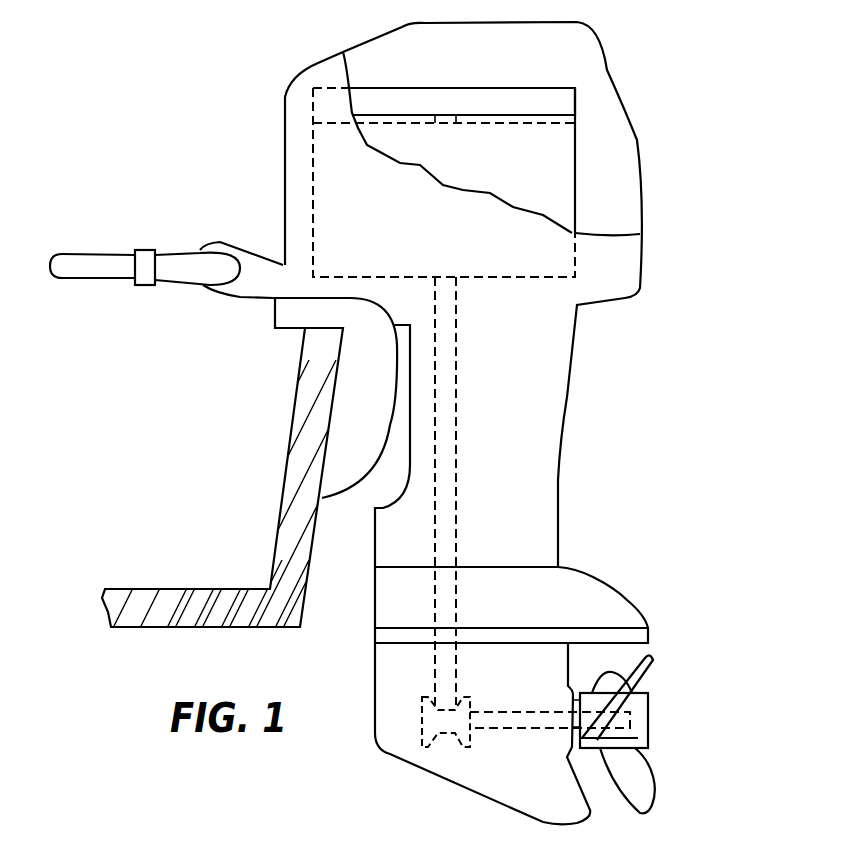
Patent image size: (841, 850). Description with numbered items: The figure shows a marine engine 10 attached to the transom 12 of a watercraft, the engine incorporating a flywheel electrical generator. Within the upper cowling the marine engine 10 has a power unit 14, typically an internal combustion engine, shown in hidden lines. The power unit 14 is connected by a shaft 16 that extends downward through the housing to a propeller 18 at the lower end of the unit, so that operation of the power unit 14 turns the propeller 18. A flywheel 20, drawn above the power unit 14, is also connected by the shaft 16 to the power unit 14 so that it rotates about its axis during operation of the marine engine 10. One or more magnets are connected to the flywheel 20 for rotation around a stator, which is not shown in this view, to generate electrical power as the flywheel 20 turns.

The marine engine 10 is at (657, 388).
The transom 12 is at (283, 479).
The power unit 14 is at (577, 150).
The shaft 16 is at (457, 460).
The propeller 18 is at (645, 783).
The flywheel 20 is at (418, 88).